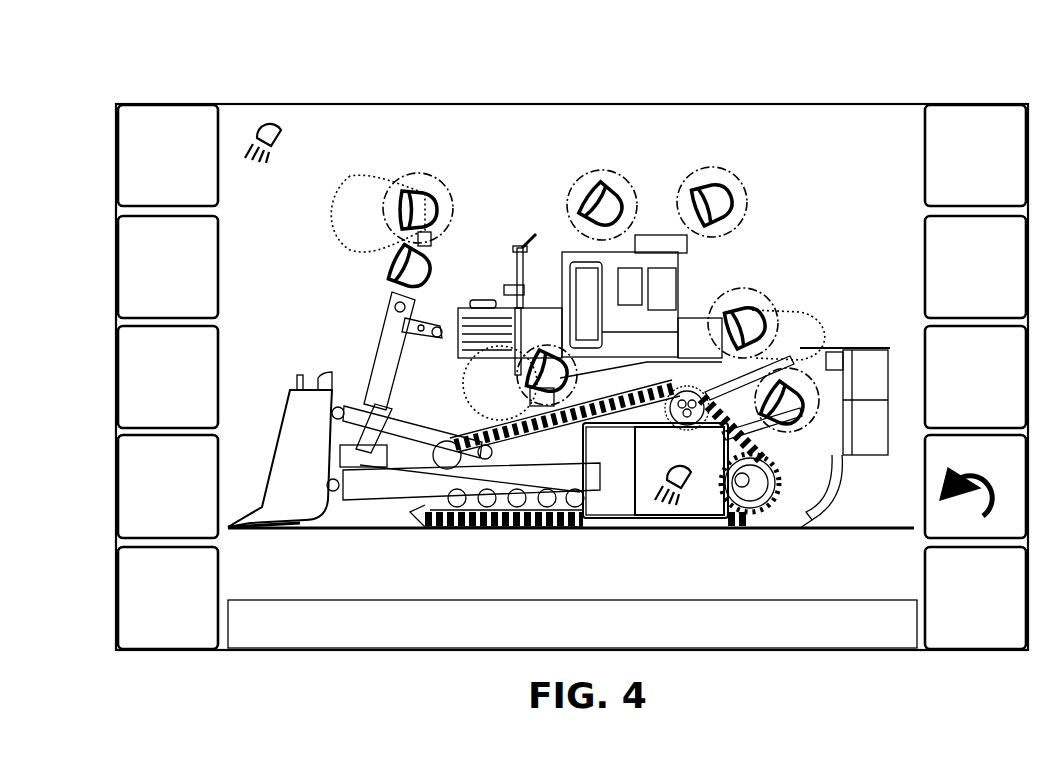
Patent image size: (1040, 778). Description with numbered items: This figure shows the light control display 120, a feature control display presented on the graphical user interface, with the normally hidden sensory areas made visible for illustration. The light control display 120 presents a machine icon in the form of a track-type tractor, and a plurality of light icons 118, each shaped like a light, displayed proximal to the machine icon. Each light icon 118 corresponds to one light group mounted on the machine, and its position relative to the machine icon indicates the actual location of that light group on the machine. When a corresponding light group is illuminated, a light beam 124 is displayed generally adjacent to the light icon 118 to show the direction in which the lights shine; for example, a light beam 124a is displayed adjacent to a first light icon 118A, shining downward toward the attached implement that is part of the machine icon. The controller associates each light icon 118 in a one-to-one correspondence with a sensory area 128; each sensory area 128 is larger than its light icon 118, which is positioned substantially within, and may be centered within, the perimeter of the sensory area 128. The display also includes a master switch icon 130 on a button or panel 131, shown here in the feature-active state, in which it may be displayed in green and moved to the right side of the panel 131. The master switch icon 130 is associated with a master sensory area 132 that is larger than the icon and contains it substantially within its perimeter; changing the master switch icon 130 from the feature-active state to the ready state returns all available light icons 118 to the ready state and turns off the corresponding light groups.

The light control display 120 is at (221, 92).
The light icon 118 is at (428, 205).
The first light icon 118A is at (754, 302).
The sensory area 128 is at (455, 206).
The light beam 124 is at (336, 190).
The light beam 124a is at (802, 328).
The master switch icon 130 is at (713, 497).
The panel 131 is at (605, 477).
The master sensory area 132 is at (599, 522).